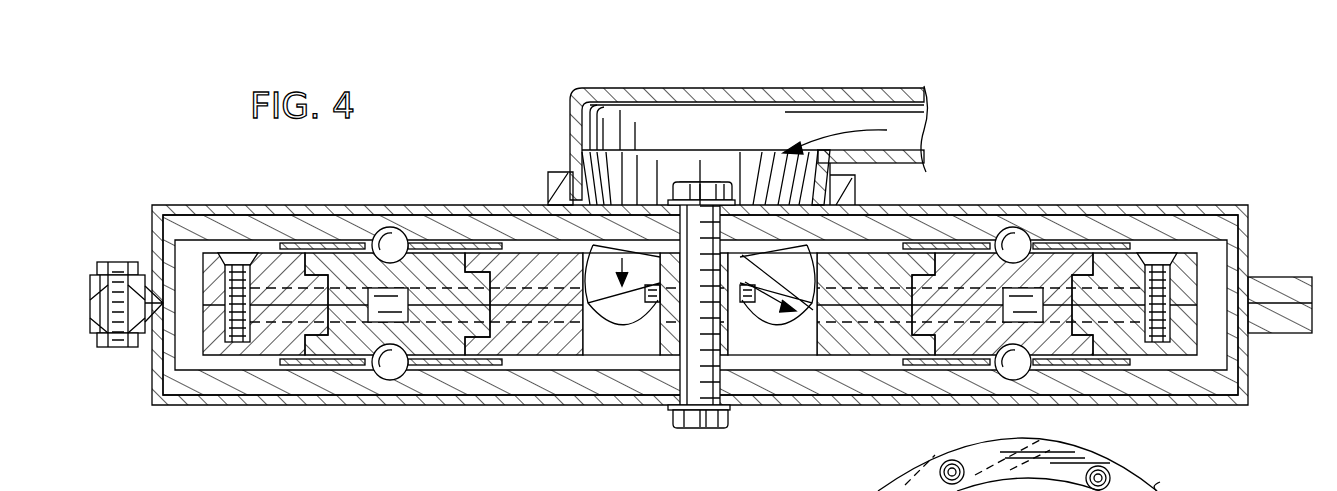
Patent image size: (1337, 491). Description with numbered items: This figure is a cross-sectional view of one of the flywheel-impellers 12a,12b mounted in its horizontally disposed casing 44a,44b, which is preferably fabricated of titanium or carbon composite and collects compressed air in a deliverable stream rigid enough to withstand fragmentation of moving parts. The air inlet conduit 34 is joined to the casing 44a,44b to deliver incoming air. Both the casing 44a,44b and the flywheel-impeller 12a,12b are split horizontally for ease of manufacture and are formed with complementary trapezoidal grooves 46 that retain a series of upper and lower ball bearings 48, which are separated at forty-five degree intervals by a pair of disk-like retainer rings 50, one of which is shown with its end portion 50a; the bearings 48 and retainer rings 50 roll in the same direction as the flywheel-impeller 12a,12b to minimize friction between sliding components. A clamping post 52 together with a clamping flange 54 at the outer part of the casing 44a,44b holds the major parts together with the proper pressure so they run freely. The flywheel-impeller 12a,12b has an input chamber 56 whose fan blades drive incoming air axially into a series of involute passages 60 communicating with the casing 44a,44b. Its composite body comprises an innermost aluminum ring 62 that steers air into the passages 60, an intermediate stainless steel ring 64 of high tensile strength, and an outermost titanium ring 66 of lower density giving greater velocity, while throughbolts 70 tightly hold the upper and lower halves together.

The air inlet conduit 34 is at (853, 88).
The casing 44a,44b is at (1088, 204).
The trapezoidal grooves 46 is at (365, 233).
The bearings 48 is at (392, 247).
The retainer rings 50 is at (340, 243).
The retaining plate end 50a is at (358, 246).
The clamping post 52 is at (672, 418).
The clamping flange 54 is at (148, 288).
The input chamber 56 is at (740, 283).
The involute passages 60 is at (953, 287).
The innermost ring 62 is at (524, 262).
The intermediate ring 64 is at (438, 262).
The outermost ring 66 is at (262, 258).
The throughbolts 70 is at (1158, 267).
The flywheel-impellers 12a,12b is at (1163, 490).